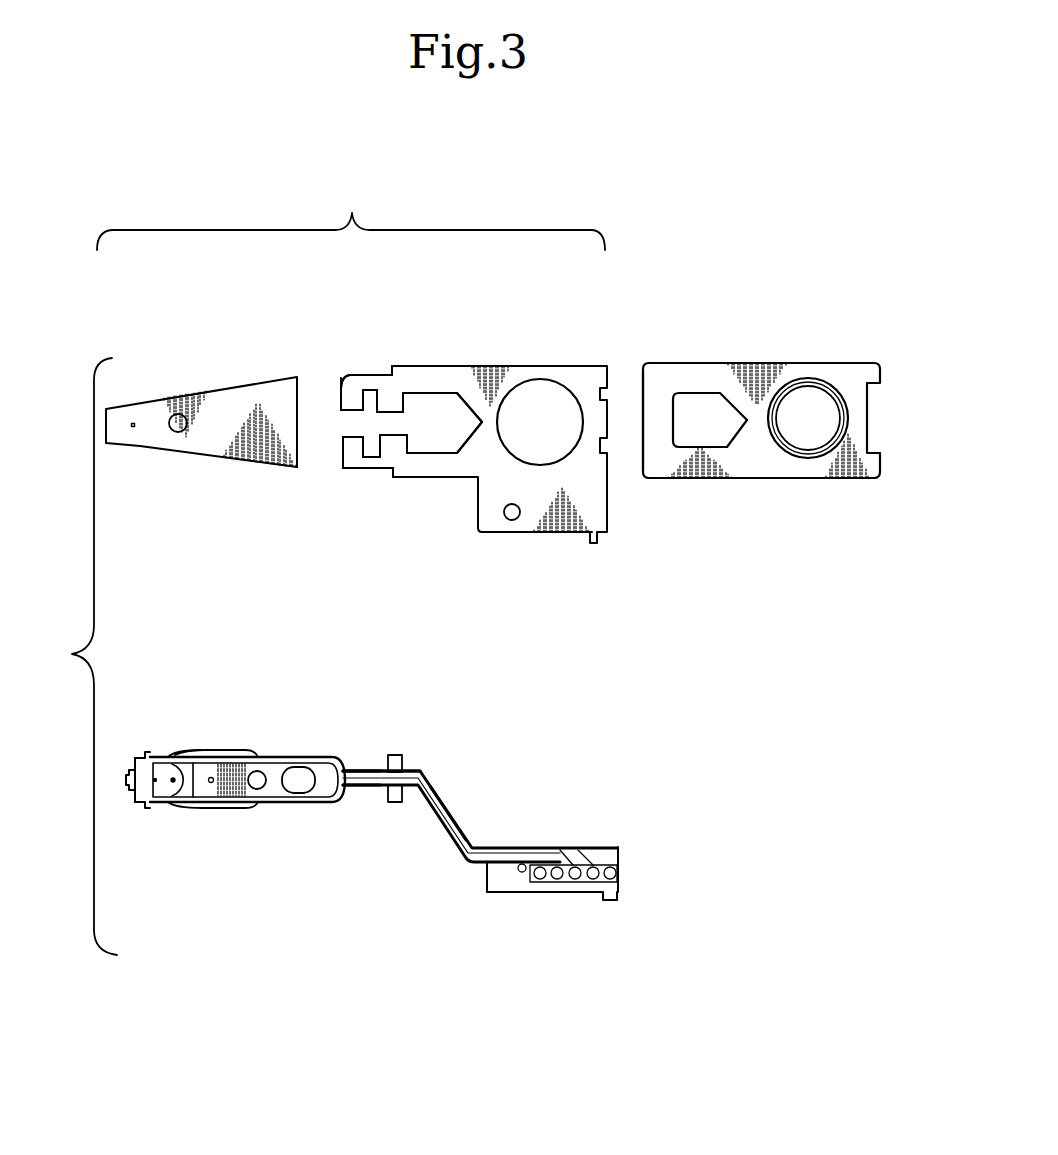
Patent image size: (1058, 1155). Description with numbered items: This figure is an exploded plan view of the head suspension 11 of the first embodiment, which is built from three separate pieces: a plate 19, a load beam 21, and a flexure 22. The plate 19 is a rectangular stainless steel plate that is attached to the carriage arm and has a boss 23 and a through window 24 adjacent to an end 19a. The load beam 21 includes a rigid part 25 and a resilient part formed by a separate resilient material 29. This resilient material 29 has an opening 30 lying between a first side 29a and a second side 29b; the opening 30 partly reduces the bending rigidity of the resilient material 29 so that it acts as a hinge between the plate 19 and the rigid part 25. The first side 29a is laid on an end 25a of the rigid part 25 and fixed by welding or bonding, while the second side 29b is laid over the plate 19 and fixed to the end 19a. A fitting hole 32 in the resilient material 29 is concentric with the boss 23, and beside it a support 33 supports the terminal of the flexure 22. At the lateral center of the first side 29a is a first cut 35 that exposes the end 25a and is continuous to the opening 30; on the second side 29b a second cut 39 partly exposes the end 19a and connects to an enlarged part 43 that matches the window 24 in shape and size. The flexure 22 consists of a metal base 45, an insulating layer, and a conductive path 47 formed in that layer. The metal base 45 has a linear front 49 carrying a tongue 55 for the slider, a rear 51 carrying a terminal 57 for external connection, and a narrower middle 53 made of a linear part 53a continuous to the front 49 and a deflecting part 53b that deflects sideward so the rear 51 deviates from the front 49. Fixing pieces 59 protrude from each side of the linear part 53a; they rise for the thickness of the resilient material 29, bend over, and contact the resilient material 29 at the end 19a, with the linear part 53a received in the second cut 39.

The head suspension 11 is at (75, 656).
The plate 19 is at (748, 362).
The end of the plate 19a is at (646, 412).
The load beam 21 is at (351, 213).
The flexure 22 is at (371, 768).
The boss 23 is at (810, 378).
The through window 24 is at (696, 401).
The rigid part 25 is at (232, 388).
The end of the rigid part 25a is at (294, 468).
The resilient material 29 is at (494, 365).
The first side 29a is at (343, 466).
The second side 29b is at (436, 372).
The opening 30 is at (382, 452).
The fitting hole 32 is at (548, 381).
The support 33 is at (548, 533).
The first cut 35 is at (333, 421).
The second cut 39 is at (399, 420).
The enlarged part 43 is at (440, 445).
The metal base 45 is at (233, 751).
The conductive path 47 is at (272, 803).
The front 49 is at (205, 750).
The rear 51 is at (598, 847).
The middle 53 is at (422, 768).
The linear part 53a is at (368, 786).
The deflecting part 53b is at (457, 815).
The tongue 55 is at (168, 788).
The terminal 57 is at (568, 883).
The fixing pieces 59 is at (395, 754).